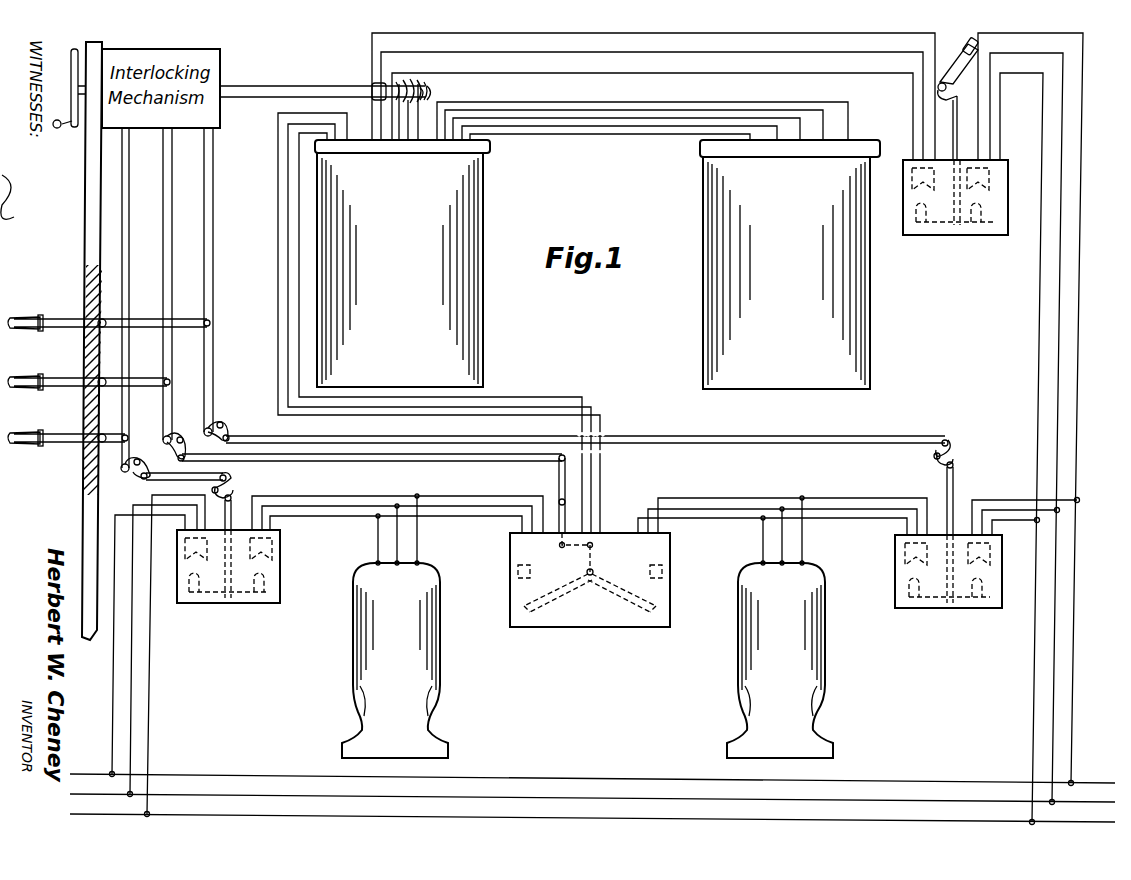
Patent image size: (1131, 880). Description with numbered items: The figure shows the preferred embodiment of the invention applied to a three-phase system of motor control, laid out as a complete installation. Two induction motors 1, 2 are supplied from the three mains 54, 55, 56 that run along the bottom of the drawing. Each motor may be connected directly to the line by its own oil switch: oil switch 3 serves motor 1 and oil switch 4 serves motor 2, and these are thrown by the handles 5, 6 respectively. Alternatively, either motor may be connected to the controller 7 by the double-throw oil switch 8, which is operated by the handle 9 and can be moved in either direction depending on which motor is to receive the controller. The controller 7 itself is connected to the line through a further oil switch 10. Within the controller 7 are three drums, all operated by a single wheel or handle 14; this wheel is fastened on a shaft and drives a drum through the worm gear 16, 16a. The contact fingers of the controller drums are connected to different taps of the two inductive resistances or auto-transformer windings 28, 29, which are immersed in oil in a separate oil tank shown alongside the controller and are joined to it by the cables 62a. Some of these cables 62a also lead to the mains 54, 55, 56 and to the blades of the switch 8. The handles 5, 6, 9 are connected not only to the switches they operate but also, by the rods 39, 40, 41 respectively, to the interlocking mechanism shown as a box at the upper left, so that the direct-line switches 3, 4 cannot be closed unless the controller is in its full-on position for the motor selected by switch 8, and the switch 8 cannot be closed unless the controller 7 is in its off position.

The motor 1 is at (395, 626).
The motor 2 is at (780, 627).
The oil switch 3 is at (228, 604).
The oil switch 4 is at (948, 609).
The handle 5 is at (32, 445).
The handle 6 is at (36, 307).
The controller 7 is at (496, 324).
The double-throw oil switch 8 is at (593, 628).
The handle 9 is at (26, 389).
The oil switch 10 is at (950, 237).
The wheel or handle 14 is at (63, 133).
The worm gear 16 is at (428, 88).
The worm gear wheel 16a is at (430, 100).
The auto-transformer winding 28 is at (843, 264).
The auto-transformer winding 29 is at (866, 310).
The rod 39 is at (128, 297).
The rod 40 is at (208, 297).
The rod 41 is at (168, 297).
The main 54 is at (642, 818).
The main 55 is at (620, 796).
The main 56 is at (600, 776).
The cables 62a is at (600, 140).